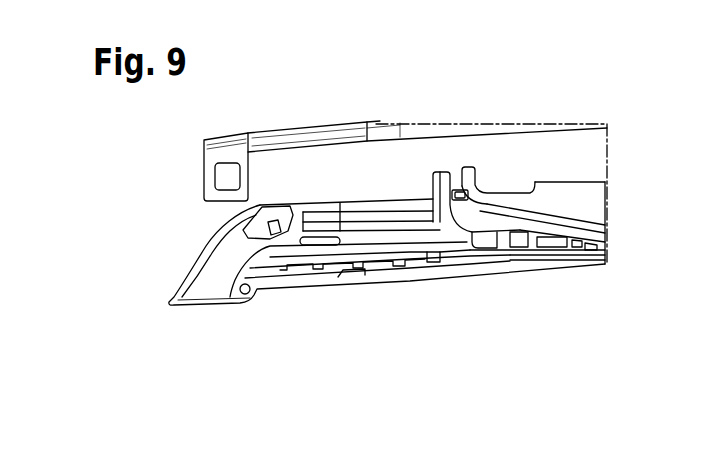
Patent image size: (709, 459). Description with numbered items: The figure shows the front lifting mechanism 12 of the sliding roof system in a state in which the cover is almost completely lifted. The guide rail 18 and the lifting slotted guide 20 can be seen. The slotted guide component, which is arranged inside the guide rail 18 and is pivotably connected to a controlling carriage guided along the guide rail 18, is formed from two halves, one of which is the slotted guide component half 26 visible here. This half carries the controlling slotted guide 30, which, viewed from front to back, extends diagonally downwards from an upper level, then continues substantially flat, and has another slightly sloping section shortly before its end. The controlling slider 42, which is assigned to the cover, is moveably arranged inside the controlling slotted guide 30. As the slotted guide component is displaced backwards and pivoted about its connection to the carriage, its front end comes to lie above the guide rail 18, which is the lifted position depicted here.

The front lifting mechanism 12 is at (157, 221).
The guide rail 18 is at (605, 263).
The lifting slotted guide 20 is at (208, 286).
The slotted guide component half 26 is at (553, 192).
The controlling slotted guide 30 is at (592, 228).
The controlling slider 42 is at (460, 188).